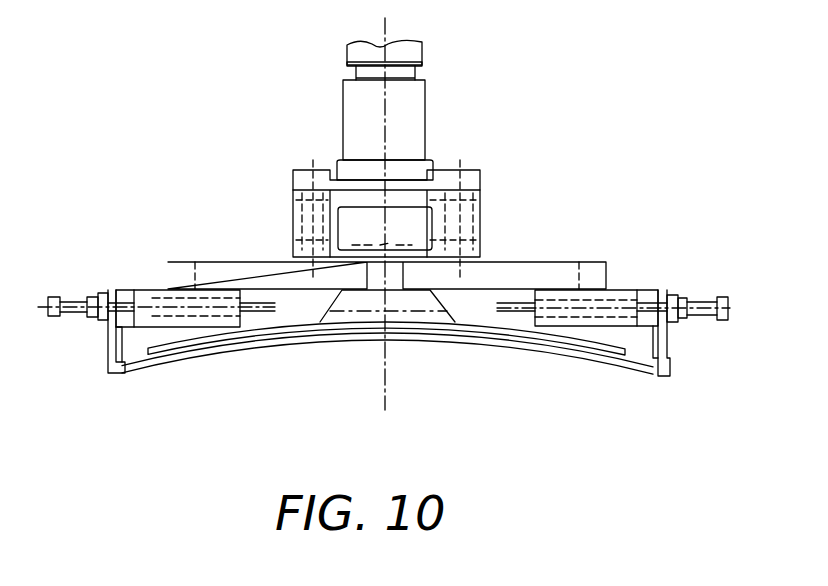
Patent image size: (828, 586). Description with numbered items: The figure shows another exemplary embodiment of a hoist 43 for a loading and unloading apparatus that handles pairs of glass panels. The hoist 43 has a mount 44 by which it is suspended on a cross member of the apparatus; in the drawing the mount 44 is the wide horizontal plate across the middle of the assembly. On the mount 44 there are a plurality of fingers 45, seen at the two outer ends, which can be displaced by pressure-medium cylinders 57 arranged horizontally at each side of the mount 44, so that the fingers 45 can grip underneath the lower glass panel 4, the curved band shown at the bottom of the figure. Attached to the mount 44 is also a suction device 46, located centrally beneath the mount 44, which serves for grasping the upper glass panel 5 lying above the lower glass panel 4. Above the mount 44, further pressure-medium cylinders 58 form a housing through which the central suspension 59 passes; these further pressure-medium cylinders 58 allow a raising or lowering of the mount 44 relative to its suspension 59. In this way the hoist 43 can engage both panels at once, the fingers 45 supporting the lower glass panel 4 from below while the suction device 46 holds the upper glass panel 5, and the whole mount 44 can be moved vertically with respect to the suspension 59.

The lower glass panel 4 is at (517, 352).
The upper glass panel 5 is at (470, 332).
The hoist 43 is at (580, 168).
The mount 44 is at (547, 270).
The fingers 45 is at (110, 340).
The suction device 46 is at (363, 313).
The pressure-medium cylinders 57 is at (148, 305).
The further pressure-medium cylinders 58 is at (313, 225).
The suspension 59 is at (413, 105).